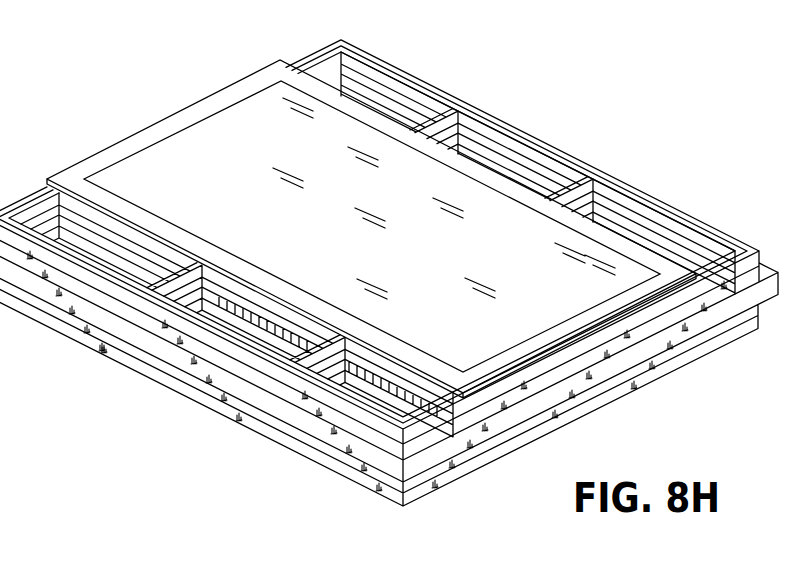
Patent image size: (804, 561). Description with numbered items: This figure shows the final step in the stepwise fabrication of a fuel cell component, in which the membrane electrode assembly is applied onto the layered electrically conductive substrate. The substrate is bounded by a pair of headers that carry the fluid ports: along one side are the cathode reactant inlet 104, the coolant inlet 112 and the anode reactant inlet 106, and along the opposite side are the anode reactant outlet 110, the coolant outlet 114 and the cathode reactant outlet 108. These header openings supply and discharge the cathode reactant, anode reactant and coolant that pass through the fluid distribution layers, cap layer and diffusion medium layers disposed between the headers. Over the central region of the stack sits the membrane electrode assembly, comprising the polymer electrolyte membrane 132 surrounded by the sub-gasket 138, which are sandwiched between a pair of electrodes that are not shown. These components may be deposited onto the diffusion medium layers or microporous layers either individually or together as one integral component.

The cathode reactant inlet 104 is at (390, 101).
The coolant inlet 112 is at (514, 165).
The anode reactant inlet 106 is at (659, 236).
The anode reactant outlet 110 is at (105, 258).
The coolant outlet 114 is at (259, 338).
The cathode reactant outlet 108 is at (390, 405).
The sub-gasket 138 is at (67, 175).
The polymer electrolyte membrane 132 is at (225, 162).